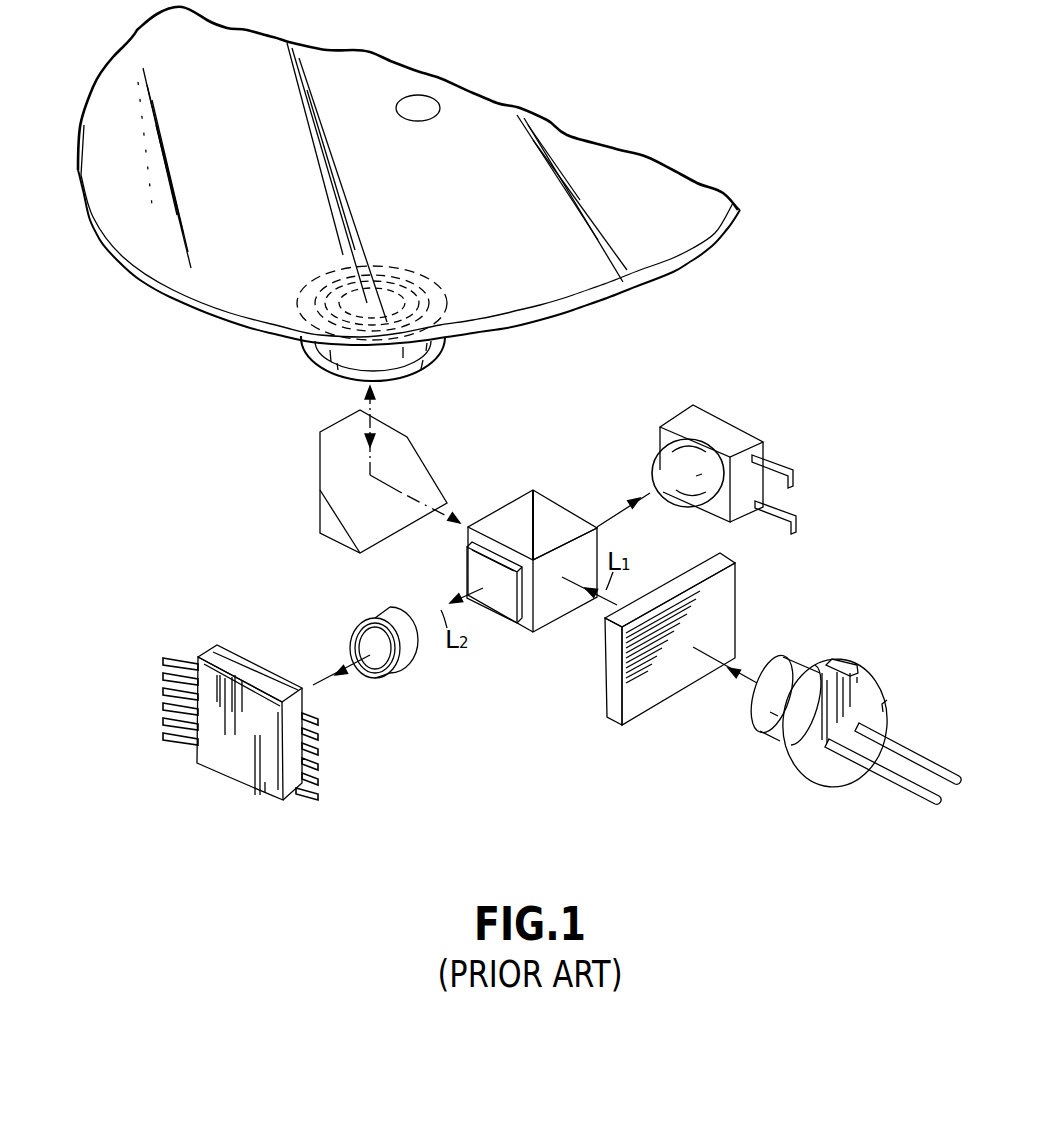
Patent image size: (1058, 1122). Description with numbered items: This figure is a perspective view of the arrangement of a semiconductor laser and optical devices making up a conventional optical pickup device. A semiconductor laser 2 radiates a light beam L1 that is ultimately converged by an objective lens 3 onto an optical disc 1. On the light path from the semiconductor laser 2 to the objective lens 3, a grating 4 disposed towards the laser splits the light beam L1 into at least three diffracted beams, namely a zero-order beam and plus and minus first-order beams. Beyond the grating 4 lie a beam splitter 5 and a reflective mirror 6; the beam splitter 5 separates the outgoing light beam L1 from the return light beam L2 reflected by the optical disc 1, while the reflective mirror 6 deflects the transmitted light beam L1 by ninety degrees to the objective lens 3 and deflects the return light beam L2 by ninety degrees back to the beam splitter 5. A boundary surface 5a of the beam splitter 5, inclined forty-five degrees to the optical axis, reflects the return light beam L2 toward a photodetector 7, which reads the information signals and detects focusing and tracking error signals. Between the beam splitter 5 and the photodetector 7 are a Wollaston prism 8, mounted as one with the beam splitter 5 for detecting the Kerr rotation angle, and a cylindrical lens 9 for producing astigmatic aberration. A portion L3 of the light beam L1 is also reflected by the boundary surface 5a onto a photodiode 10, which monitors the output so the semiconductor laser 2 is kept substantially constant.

The optical disc 1 is at (672, 237).
The semiconductor laser 2 is at (800, 657).
The objective lens 3 is at (415, 310).
The grating 4 is at (643, 703).
The beam splitter 5 is at (553, 612).
The boundary surface 5a is at (530, 500).
The reflective mirror 6 is at (397, 522).
The photodetector 7 is at (233, 770).
The Wollaston prism 8 is at (513, 618).
The cylindrical lens 9 is at (410, 653).
The photodiode 10 is at (717, 427).
The light beam L1 is at (373, 410).
The return light beam L2 is at (449, 513).
The portion of the light beam L3 is at (617, 510).